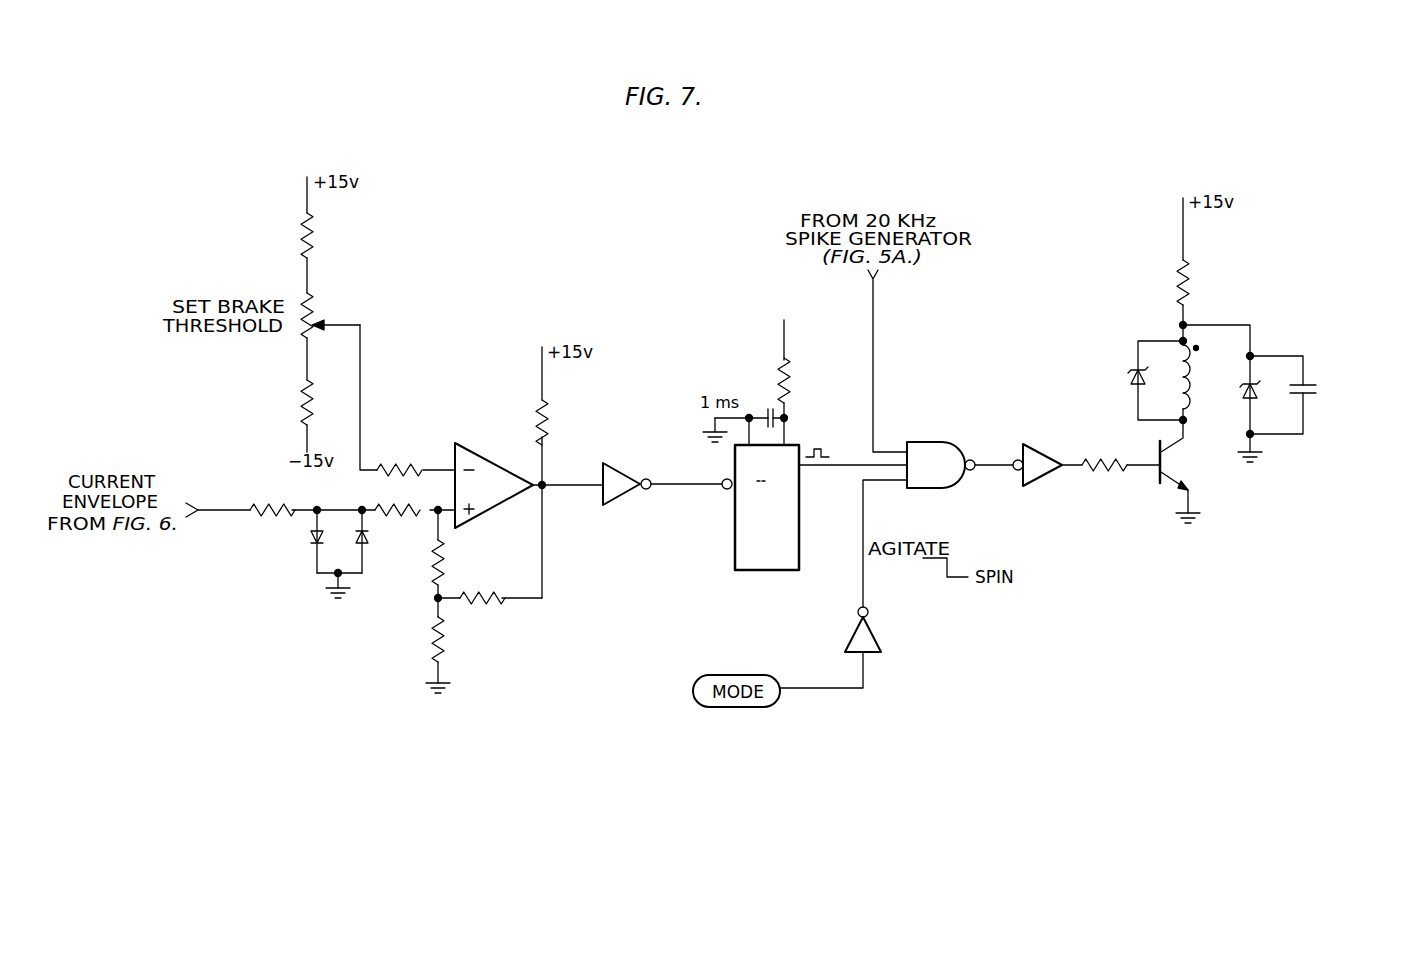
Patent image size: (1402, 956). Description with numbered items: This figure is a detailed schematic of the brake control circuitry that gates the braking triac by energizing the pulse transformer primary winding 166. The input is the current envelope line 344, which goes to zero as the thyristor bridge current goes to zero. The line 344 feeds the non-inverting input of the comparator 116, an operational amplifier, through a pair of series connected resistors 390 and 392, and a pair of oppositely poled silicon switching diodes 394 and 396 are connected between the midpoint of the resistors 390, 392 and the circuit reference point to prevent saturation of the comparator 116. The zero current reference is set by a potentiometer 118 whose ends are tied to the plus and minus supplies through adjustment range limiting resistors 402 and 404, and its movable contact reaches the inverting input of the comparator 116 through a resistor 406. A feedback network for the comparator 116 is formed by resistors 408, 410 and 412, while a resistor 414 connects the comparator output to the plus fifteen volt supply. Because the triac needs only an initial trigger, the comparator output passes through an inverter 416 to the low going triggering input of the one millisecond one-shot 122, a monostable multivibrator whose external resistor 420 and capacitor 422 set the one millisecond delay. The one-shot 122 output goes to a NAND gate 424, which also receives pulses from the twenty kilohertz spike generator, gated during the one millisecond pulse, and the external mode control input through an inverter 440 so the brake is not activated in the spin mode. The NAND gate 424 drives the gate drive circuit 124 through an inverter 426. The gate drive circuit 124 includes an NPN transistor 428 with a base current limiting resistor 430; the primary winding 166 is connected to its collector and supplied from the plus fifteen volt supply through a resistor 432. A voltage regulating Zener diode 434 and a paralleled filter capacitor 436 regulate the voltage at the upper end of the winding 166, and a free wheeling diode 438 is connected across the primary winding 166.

The adjustment range limiting resistor 402 is at (312, 222).
The potentiometer 118 is at (318, 300).
The adjustment range limiting resistor 404 is at (304, 384).
The resistor 406 is at (422, 466).
The current envelope line 344 is at (228, 508).
The resistor 390 is at (288, 505).
The resistor 392 is at (388, 508).
The silicon switching diode 394 is at (310, 537).
The silicon switching diode 396 is at (367, 535).
The comparator 116 is at (492, 462).
The feedback resistor 410 is at (447, 556).
The feedback resistor 408 is at (477, 597).
The feedback resistor 412 is at (445, 647).
The resistor 414 is at (548, 418).
The inverter 416 is at (643, 446).
The one-shot 122 is at (738, 572).
The capacitor 422 is at (760, 410).
The resistor 420 is at (796, 366).
The NAND gate 424 is at (958, 442).
The inverter 426 is at (1062, 412).
The base current limiting resistor 430 is at (1120, 460).
The NPN transistor 428 is at (1172, 468).
The gate drive circuit 124 is at (1101, 487).
The resistor 432 is at (1189, 272).
The free wheeling diode 438 is at (1128, 382).
The pulse transformer primary winding 166 is at (1191, 384).
The voltage regulating Zener diode 434 is at (1262, 386).
The filter capacitor 436 is at (1313, 398).
The inverter 440 is at (886, 642).